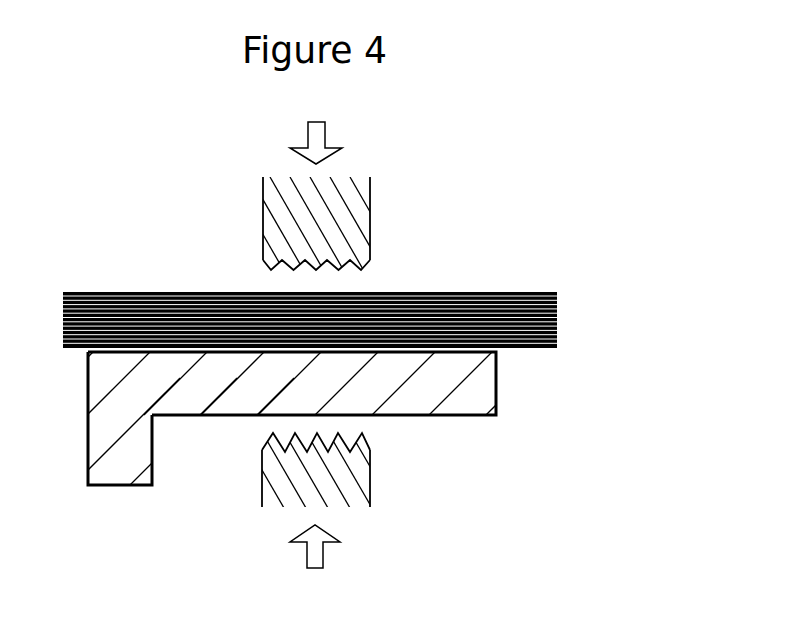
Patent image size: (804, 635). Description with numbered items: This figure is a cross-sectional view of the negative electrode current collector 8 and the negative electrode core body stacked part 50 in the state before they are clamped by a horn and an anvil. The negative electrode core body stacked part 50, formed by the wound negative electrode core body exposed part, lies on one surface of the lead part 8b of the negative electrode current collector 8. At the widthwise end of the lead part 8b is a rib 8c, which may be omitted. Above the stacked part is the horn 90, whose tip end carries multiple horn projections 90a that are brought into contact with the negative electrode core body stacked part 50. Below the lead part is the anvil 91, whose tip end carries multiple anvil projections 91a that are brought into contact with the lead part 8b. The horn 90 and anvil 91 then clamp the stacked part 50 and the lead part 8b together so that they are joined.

The negative electrode current collector 8 is at (306, 451).
The lead part 8b is at (483, 382).
The rib 8c is at (105, 467).
The negative electrode core body stacked part 50 is at (537, 294).
The horn 90 is at (319, 221).
The horn projections 90a is at (273, 265).
The anvil 91 is at (340, 467).
The anvil projections 91a is at (362, 433).